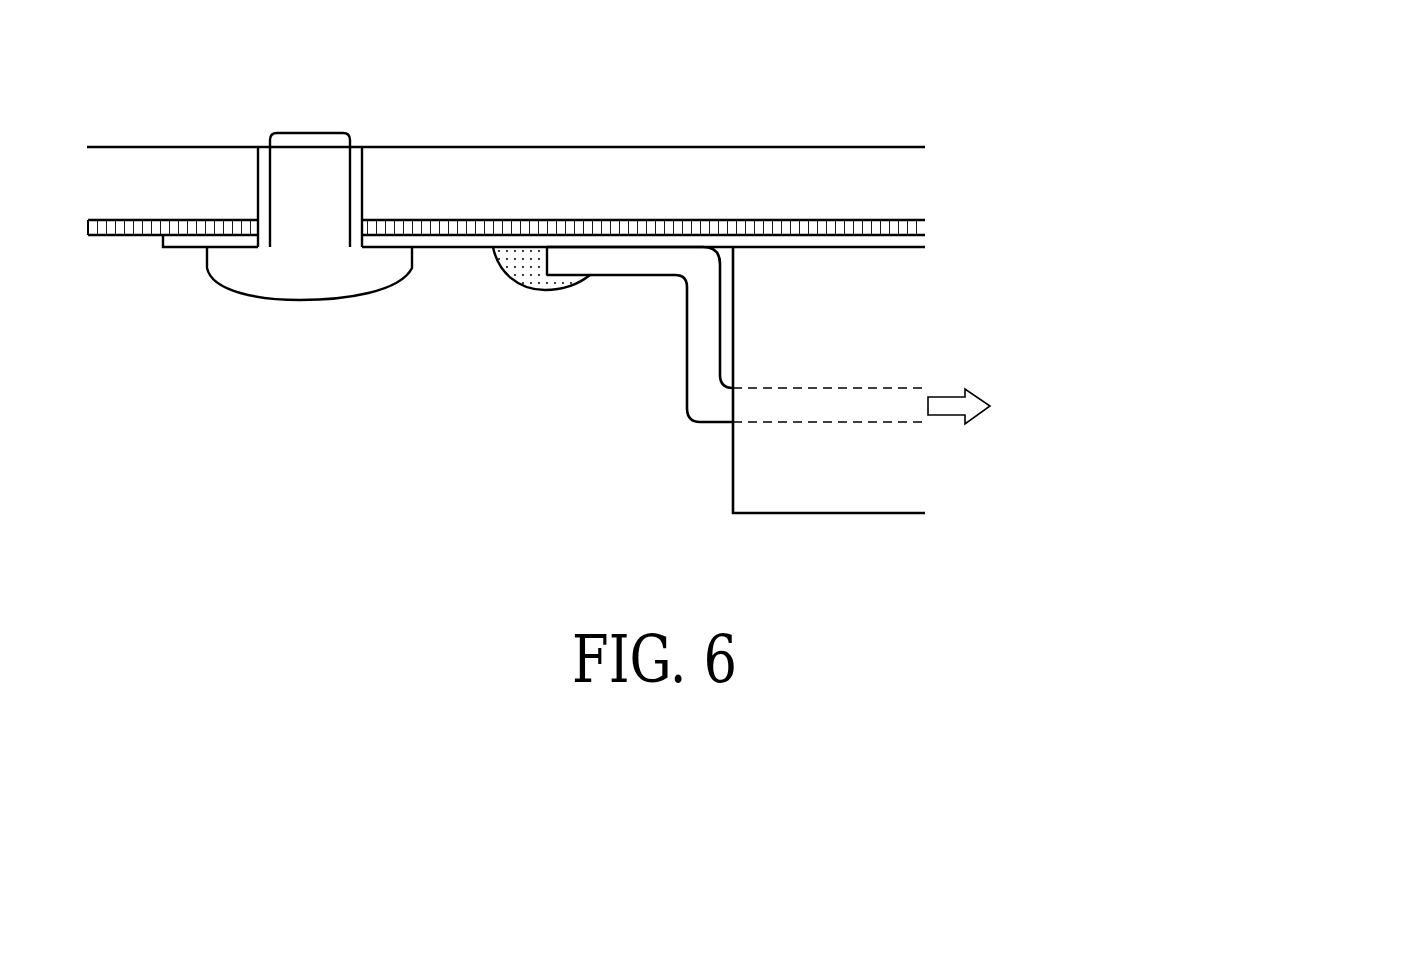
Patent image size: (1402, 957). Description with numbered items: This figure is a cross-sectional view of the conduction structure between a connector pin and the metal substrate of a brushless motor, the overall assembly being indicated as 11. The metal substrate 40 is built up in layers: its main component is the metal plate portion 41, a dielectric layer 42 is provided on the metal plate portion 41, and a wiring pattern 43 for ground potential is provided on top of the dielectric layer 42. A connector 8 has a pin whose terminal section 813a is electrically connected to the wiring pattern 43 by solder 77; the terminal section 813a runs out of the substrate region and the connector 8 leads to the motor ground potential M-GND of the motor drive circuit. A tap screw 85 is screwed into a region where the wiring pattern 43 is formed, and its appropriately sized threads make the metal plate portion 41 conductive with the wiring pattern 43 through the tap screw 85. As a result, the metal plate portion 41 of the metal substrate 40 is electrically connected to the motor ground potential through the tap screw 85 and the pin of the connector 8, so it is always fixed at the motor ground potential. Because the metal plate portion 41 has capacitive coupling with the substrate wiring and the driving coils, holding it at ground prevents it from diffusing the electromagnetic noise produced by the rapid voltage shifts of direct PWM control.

The motor base / printed circuit board assembly 11 is at (186, 117).
The metal substrate 40 is at (540, 57).
The metal plate portion 41 is at (407, 170).
The dielectric layer 42 is at (448, 228).
The wiring pattern 43 is at (497, 243).
The tap screw 85 is at (305, 133).
The solder 77 is at (522, 282).
The terminal section 813a is at (685, 355).
The connector 8 is at (805, 493).